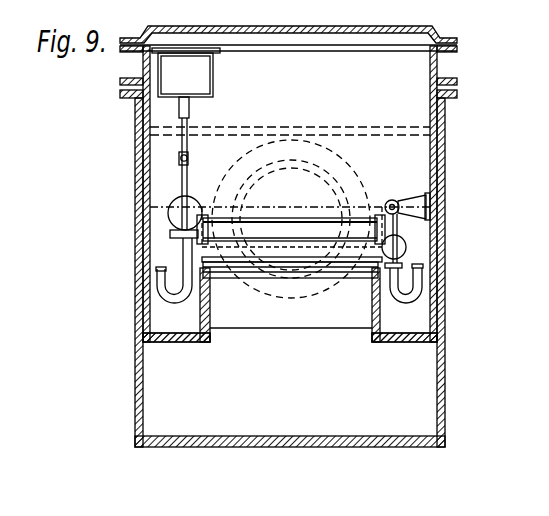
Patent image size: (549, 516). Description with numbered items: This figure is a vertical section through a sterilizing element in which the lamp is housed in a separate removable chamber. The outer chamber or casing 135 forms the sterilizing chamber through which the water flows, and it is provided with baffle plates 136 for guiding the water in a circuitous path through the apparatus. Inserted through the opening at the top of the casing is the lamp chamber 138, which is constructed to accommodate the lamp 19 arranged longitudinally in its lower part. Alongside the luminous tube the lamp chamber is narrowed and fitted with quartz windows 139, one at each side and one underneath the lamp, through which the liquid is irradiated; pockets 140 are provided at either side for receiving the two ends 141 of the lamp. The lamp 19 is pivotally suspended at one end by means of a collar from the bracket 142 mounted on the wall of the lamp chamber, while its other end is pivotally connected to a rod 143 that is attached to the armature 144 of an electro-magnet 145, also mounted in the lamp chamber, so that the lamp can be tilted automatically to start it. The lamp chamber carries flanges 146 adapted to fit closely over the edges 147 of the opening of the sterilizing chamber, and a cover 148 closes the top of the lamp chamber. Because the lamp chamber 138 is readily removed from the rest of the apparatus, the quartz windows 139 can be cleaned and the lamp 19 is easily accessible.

The lamp 19 is at (291, 237).
The outer chamber or casing 135 is at (136, 342).
The baffle plates 136 is at (290, 415).
The lamp chamber 138 is at (428, 110).
The quartz windows 139 is at (235, 270).
The pockets 140 is at (177, 342).
The ends of the lamp 141 is at (289, 262).
The bracket 142 is at (407, 199).
The rod 143 is at (188, 159).
The armature 144 is at (192, 117).
The electro-magnet 145 is at (186, 72).
The flanges 146 is at (457, 82).
The edges of the opening 147 is at (302, 104).
The cover 148 is at (288, 27).